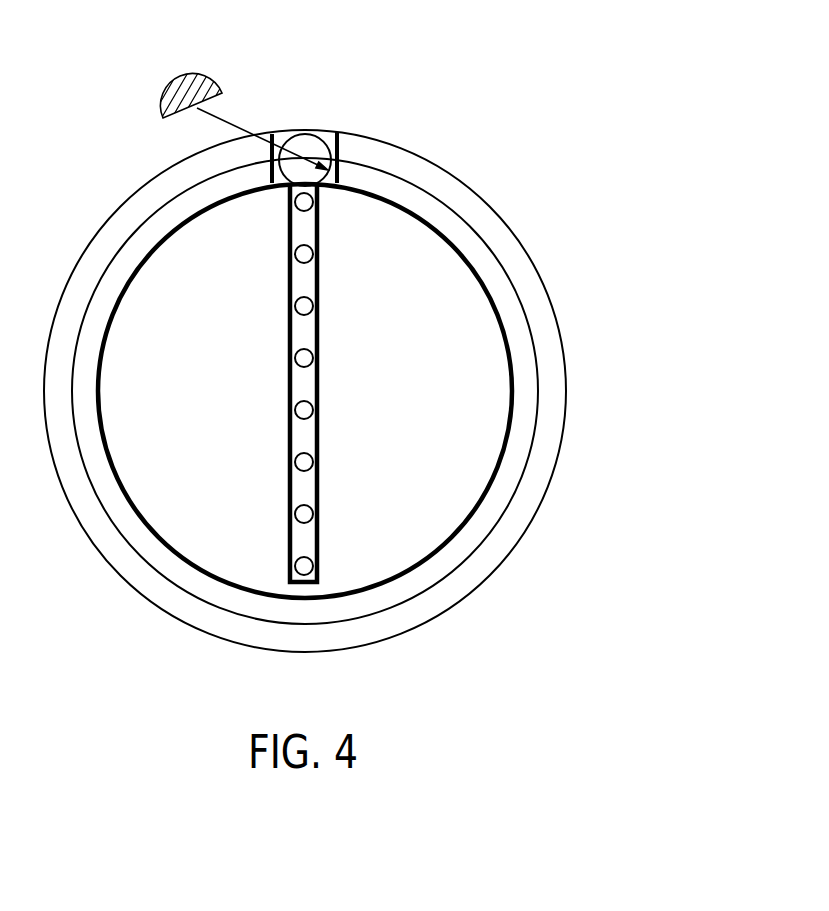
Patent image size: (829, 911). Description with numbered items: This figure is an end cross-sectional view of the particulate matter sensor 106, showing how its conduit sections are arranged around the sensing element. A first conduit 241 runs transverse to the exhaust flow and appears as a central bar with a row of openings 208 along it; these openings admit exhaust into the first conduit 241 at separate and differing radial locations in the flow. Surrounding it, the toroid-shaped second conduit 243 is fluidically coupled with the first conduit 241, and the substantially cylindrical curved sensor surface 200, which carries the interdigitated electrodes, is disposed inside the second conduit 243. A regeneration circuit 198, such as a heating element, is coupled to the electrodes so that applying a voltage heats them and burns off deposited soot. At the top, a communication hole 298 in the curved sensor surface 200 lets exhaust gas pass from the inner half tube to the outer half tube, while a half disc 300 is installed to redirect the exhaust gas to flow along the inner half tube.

The particulate matter sensor 106 is at (586, 109).
The regeneration circuit 198 is at (100, 437).
The curved sensor surface 200 is at (512, 277).
The openings 208 is at (318, 200).
The first conduit 241 is at (290, 427).
The second conduit 243 is at (455, 177).
The communication hole 298 is at (352, 166).
The half disc 300 is at (213, 77).